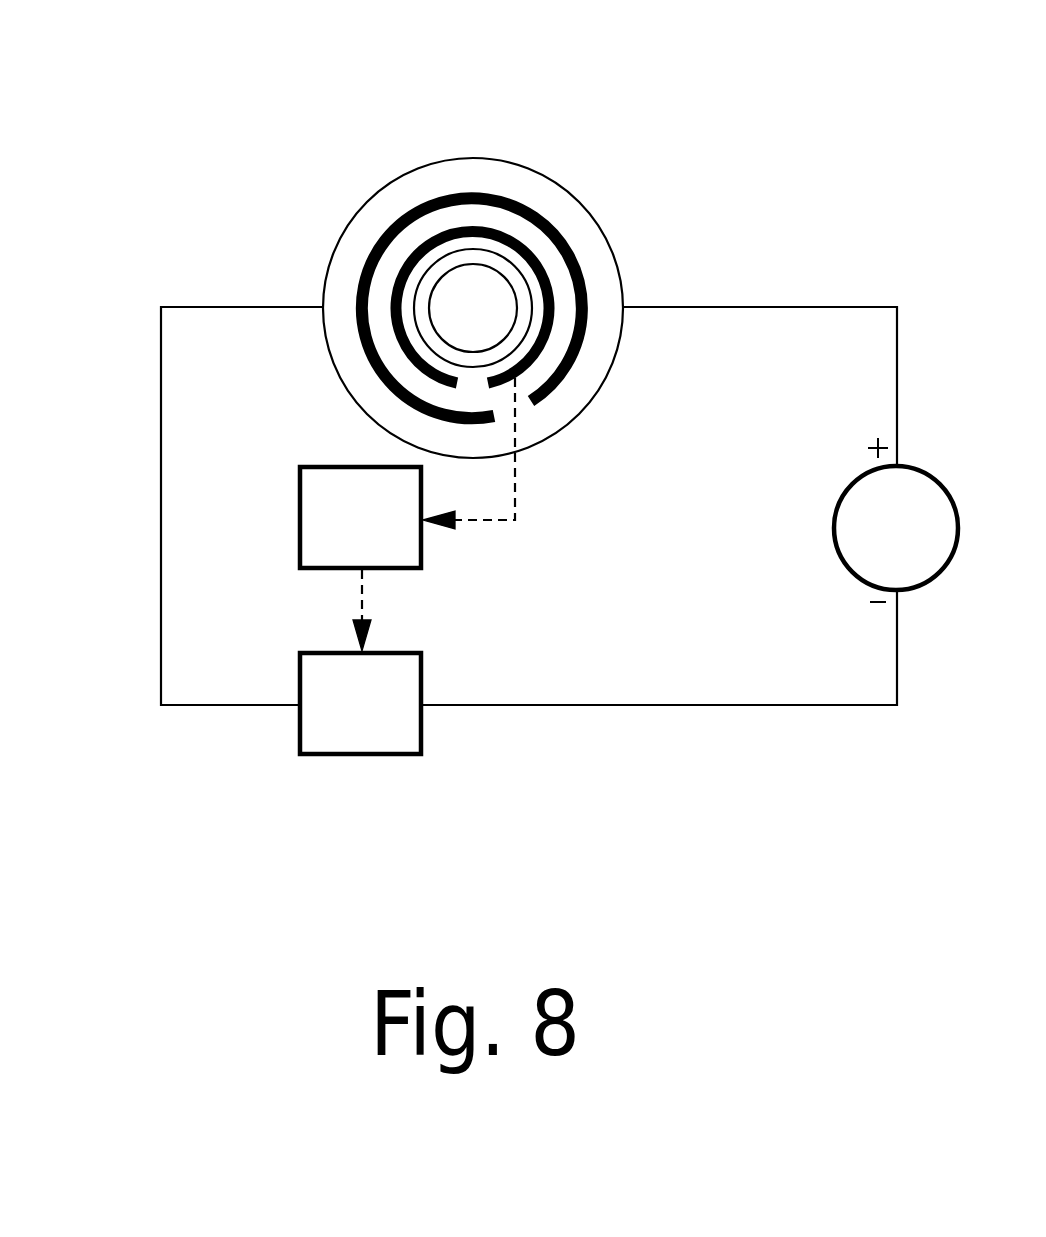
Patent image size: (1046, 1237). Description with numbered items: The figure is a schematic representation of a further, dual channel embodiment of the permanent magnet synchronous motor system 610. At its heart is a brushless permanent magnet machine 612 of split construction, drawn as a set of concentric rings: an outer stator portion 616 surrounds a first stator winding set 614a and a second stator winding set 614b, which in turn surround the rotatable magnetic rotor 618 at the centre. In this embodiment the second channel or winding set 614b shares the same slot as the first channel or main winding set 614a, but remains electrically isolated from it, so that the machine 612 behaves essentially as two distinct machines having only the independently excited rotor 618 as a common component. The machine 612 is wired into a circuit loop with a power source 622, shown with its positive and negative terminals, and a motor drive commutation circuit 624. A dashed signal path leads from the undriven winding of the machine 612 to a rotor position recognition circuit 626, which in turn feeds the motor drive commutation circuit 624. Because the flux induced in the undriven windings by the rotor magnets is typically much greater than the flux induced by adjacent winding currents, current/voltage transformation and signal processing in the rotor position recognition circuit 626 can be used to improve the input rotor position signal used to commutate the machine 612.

The permanent magnet synchronous motor system 610 is at (147, 729).
The brushless permanent magnet machine 612 is at (496, 233).
The first stator winding set 614a is at (380, 238).
The second stator winding set 614b is at (553, 288).
The stator portion 616 is at (430, 180).
The rotor 618 is at (488, 293).
The power source 622 is at (928, 552).
The motor drive commutation circuit 624 is at (395, 731).
The rotor position recognition circuit 626 is at (395, 545).